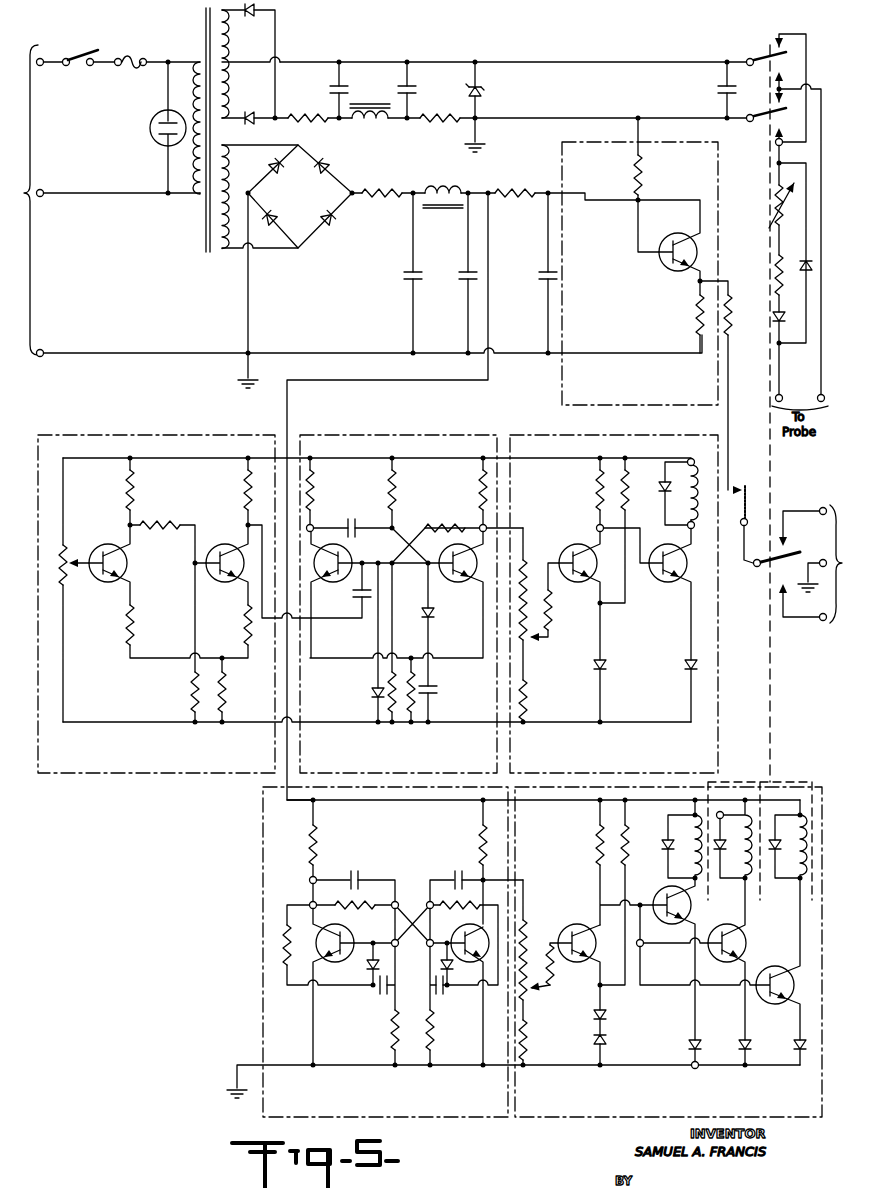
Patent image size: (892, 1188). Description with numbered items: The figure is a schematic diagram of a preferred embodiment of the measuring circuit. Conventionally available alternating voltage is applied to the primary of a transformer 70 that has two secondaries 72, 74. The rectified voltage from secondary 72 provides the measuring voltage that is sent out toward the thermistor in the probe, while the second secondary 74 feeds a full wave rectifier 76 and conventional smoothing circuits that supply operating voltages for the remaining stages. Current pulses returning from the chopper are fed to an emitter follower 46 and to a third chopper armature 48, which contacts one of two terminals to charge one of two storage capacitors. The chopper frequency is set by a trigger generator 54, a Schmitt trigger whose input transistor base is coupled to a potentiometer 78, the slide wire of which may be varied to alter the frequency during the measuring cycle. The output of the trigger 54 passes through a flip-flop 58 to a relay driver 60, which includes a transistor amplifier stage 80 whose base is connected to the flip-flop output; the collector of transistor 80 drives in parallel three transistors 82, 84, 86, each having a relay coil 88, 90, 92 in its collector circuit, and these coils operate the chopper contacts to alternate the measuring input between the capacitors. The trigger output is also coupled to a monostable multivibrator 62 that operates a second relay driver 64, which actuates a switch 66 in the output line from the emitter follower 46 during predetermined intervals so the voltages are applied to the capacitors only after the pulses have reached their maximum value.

The emitter follower 46 is at (558, 162).
The third chopper armature 48 is at (786, 554).
The trigger generator 54 is at (174, 587).
The flip-flop 58 is at (260, 836).
The relay driver 60 is at (663, 964).
The monostable multivibrator 62 is at (402, 428).
The relay driver 64 is at (542, 428).
The switch 66 is at (750, 492).
The transformer 70 is at (229, 128).
The secondary 72 is at (224, 42).
The secondary 74 is at (230, 184).
The full wave rectifier 76 is at (306, 200).
The potentiometer 78 is at (66, 548).
The transistor amplifier stage 80 is at (570, 926).
The transistor 82 is at (660, 896).
The transistor 84 is at (743, 956).
The transistor 86 is at (796, 1002).
The relay coil 88 is at (698, 878).
The relay coil 90 is at (747, 878).
The relay coil 92 is at (800, 878).